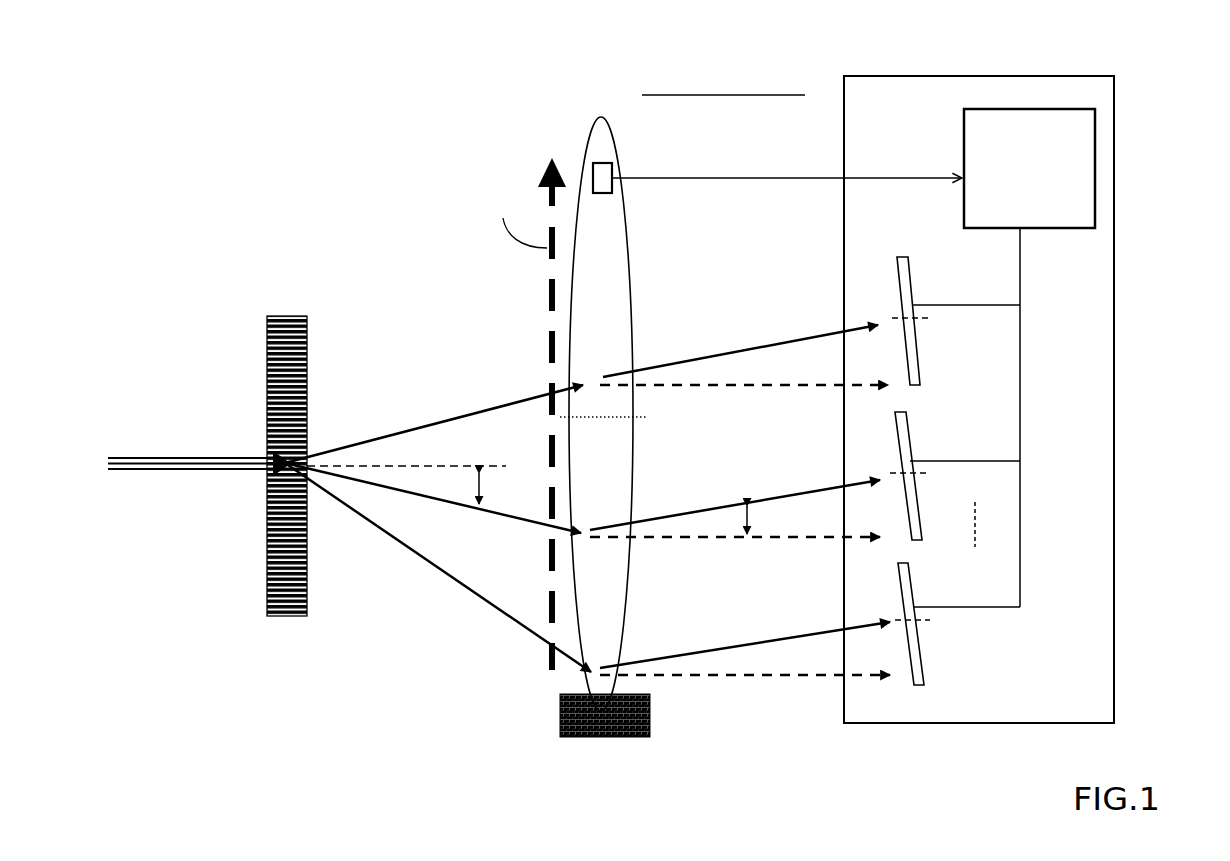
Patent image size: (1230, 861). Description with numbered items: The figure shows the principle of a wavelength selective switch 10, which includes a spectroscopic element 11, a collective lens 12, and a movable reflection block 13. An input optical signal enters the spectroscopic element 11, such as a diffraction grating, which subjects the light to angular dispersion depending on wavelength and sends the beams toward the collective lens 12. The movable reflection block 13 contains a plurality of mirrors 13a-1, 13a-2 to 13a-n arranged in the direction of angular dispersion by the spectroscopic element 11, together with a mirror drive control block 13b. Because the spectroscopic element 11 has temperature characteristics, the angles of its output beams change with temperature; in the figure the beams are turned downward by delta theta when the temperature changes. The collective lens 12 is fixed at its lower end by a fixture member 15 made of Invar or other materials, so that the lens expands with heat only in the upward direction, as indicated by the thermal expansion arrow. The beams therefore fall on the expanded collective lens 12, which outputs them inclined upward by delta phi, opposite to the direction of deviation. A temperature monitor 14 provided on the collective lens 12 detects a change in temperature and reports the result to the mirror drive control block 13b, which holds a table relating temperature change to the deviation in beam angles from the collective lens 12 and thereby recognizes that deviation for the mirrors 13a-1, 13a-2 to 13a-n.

The wavelength selective switch 10 is at (222, 103).
The spectroscopic element 11 is at (290, 316).
The collective lens 12 is at (600, 117).
The movable reflection block 13 is at (898, 76).
The mirror 13a-1 is at (910, 276).
The mirror 13a-2 is at (907, 433).
The mirror 13a-n is at (918, 658).
The mirror drive control block 13b is at (992, 107).
The temperature monitor 14 is at (603, 163).
The fixture member 15 is at (620, 737).